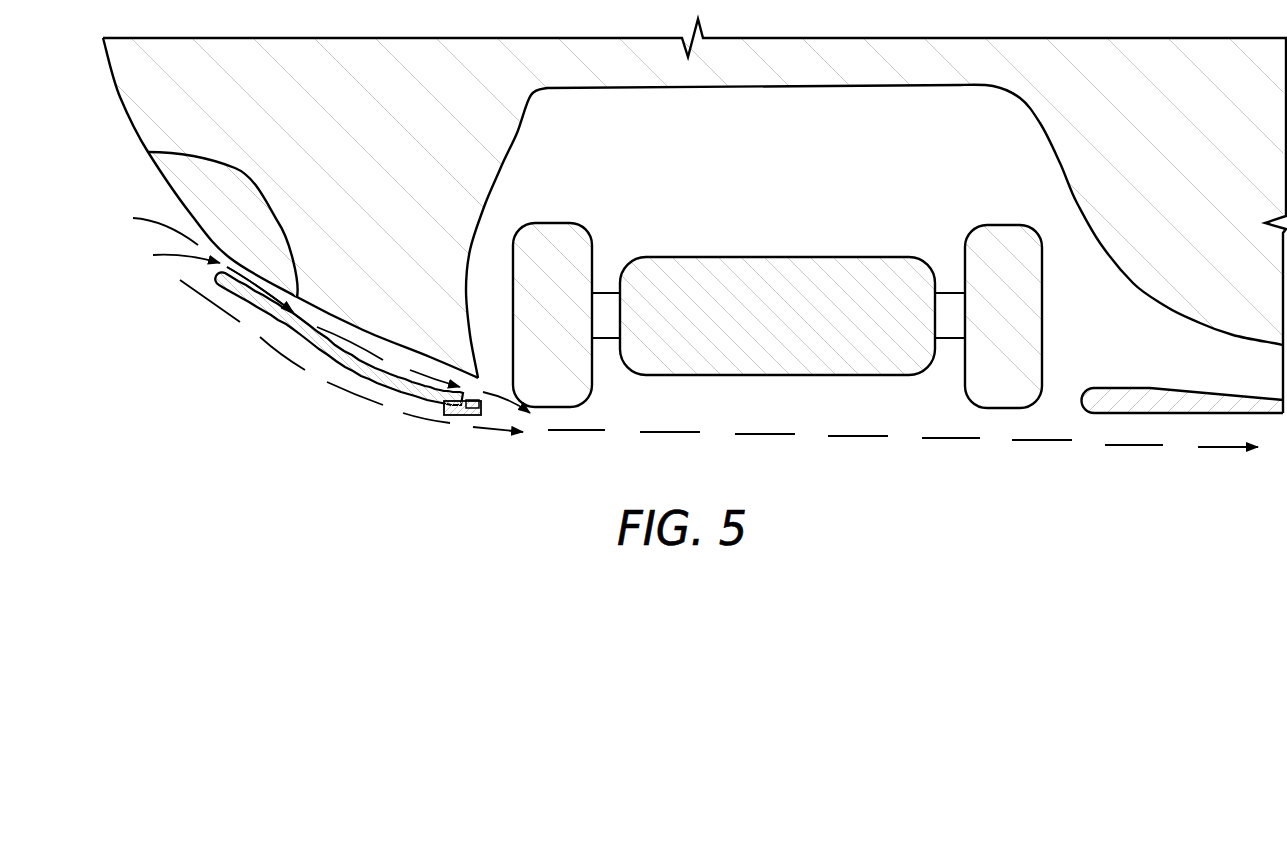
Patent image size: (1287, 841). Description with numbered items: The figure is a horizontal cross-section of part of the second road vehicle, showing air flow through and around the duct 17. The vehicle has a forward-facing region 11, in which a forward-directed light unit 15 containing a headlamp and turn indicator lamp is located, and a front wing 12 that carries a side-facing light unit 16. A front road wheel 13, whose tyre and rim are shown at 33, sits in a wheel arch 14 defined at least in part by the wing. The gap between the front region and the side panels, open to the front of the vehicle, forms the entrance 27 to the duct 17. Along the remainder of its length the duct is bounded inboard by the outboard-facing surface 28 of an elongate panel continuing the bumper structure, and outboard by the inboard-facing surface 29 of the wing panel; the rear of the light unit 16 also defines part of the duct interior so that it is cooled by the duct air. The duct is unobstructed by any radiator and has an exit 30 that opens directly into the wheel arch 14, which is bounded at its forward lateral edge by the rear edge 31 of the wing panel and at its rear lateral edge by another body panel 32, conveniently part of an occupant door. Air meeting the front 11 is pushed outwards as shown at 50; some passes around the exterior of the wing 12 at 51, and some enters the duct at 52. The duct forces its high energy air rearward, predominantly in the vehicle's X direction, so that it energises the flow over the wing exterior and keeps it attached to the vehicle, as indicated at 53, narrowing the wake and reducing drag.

The forward-facing region 11 is at (123, 105).
The front wing 12 is at (318, 363).
The front road wheel 13 is at (775, 257).
The wheel arch 14 is at (767, 161).
The forward-directed light unit 15 is at (237, 188).
The side-facing light unit 16 is at (462, 416).
The duct 17 is at (378, 342).
The entrance 27 is at (225, 270).
The outboard-facing surface 28 is at (307, 309).
The inboard-facing surface 29 is at (402, 388).
The exit 30 is at (487, 393).
The rear edge of the wing panel 31 is at (482, 402).
The body panel 32 is at (1082, 415).
The tyre and rim 33 is at (550, 225).
The outward air flow 50 is at (148, 235).
The exterior wing air flow 51 is at (233, 327).
The duct air flow 52 is at (276, 290).
The attached air flow 53 is at (853, 448).